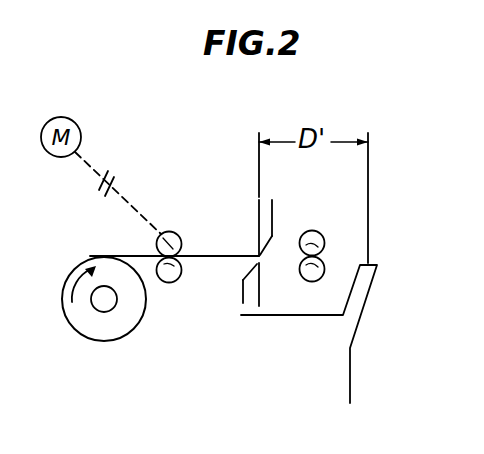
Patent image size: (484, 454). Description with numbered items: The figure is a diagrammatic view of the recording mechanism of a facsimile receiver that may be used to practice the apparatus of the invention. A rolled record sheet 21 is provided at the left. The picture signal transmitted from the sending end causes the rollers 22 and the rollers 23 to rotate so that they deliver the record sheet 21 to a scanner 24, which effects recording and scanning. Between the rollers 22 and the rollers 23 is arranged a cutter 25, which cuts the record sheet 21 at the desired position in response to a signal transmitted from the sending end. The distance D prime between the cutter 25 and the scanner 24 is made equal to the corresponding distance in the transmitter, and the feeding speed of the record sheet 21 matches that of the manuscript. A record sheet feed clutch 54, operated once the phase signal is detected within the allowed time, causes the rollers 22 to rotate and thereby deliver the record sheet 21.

The rolled record sheet 21 is at (86, 256).
The rollers 22 is at (202, 225).
The rollers 23 is at (318, 233).
The scanner 24 is at (350, 378).
The cutter 25 is at (243, 298).
The record sheet feed clutch 54 is at (113, 181).